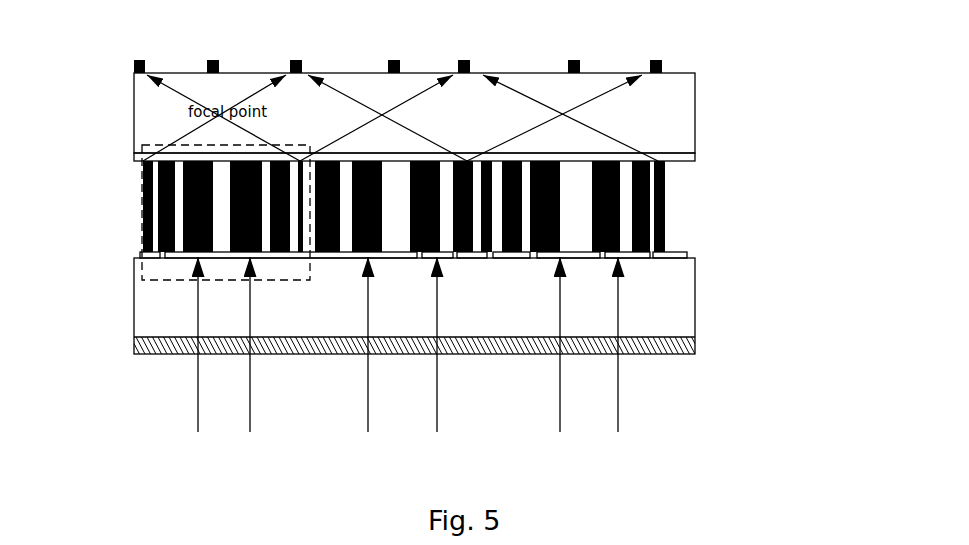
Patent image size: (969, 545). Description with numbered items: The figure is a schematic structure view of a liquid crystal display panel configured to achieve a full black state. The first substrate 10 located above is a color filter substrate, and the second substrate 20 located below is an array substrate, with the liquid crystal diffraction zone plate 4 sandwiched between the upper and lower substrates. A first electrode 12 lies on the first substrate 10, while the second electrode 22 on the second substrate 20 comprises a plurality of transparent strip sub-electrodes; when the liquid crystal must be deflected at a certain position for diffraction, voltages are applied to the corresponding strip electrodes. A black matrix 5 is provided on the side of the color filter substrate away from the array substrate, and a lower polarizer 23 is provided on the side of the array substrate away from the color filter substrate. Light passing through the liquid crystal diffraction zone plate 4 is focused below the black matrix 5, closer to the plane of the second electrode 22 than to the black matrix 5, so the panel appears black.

The liquid crystal diffraction unit 4 is at (143, 187).
The black matrix 5 is at (648, 60).
The first substrate 10 is at (685, 117).
The first electrode 12 is at (693, 162).
The second substrate 20 is at (157, 308).
The second electrode 22 is at (687, 254).
The lower polarizer 23 is at (652, 348).